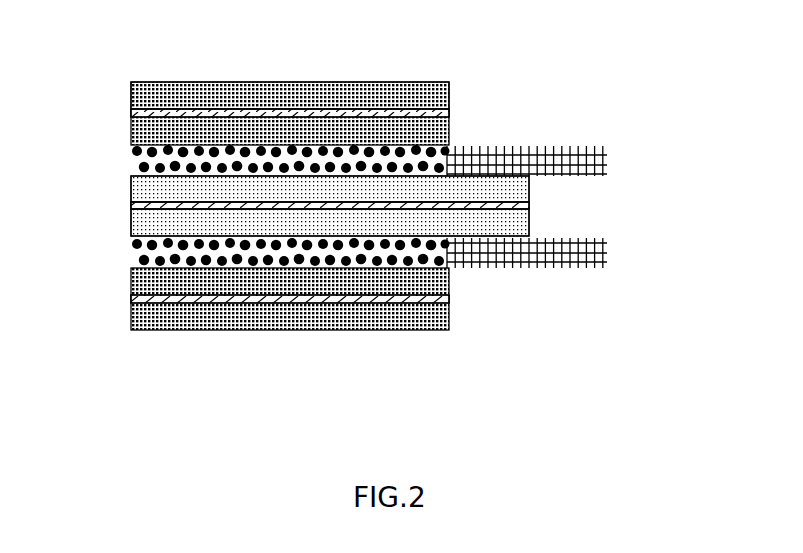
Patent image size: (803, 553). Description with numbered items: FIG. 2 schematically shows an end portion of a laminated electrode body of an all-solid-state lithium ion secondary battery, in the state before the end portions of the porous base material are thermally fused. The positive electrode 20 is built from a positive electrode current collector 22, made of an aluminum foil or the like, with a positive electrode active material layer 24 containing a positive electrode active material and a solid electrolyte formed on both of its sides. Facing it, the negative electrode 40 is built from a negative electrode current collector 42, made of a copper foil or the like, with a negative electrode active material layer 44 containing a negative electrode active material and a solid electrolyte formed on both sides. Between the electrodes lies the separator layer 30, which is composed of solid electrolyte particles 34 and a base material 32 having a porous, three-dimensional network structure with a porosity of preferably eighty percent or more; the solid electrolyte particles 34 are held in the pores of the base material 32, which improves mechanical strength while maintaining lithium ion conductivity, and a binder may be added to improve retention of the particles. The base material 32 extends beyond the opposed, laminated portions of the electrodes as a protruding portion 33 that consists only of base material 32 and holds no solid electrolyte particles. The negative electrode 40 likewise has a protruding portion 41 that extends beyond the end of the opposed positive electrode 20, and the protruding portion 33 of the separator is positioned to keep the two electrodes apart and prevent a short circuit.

The positive electrode 20 is at (323, 210).
The positive electrode current collector 22 is at (450, 113).
The positive electrode active material layer 24 is at (420, 82).
The separator layer 30 is at (118, 153).
The base material 32 is at (553, 179).
The protruding portion 33 is at (517, 148).
The solid electrolyte particles 34 is at (458, 138).
The negative electrode 40 is at (348, 249).
The protruding portion 41 is at (503, 234).
The negative electrode current collector 42 is at (529, 205).
The negative electrode active material layer 44 is at (529, 219).